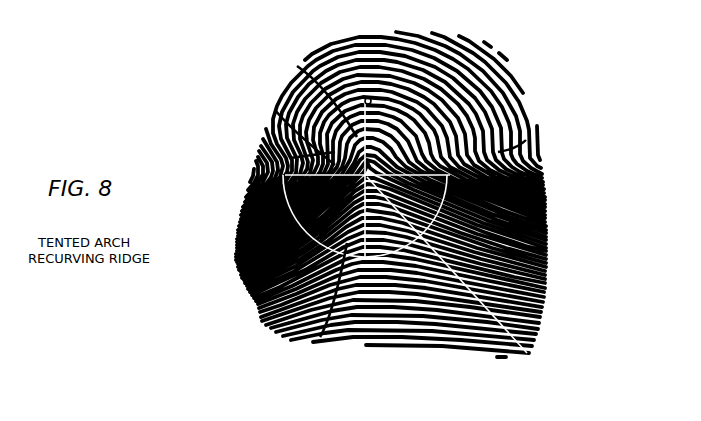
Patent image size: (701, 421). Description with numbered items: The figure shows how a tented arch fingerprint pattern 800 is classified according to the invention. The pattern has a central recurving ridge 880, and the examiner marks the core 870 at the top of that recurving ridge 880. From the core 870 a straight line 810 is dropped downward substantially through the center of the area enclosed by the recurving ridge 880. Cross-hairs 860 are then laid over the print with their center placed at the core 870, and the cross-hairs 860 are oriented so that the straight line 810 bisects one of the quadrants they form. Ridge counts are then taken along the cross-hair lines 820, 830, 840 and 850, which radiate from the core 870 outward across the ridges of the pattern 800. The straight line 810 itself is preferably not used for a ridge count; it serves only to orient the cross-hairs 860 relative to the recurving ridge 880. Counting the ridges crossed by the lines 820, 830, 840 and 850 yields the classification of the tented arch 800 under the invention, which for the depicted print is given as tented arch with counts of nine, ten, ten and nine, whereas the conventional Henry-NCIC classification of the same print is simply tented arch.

The tented arch fingerprint pattern 800 is at (583, 101).
The straight line 810 is at (532, 353).
The line 820 is at (526, 140).
The line 830 is at (297, 66).
The line 840 is at (275, 110).
The line 850 is at (320, 337).
The cross-hairs 860 is at (364, 99).
The core 870 is at (290, 190).
The recurving ridge 880 is at (537, 190).